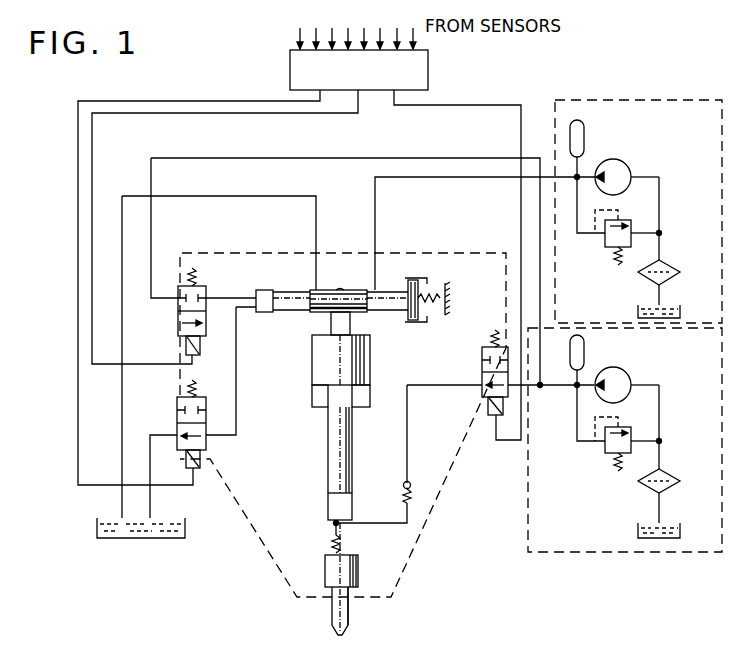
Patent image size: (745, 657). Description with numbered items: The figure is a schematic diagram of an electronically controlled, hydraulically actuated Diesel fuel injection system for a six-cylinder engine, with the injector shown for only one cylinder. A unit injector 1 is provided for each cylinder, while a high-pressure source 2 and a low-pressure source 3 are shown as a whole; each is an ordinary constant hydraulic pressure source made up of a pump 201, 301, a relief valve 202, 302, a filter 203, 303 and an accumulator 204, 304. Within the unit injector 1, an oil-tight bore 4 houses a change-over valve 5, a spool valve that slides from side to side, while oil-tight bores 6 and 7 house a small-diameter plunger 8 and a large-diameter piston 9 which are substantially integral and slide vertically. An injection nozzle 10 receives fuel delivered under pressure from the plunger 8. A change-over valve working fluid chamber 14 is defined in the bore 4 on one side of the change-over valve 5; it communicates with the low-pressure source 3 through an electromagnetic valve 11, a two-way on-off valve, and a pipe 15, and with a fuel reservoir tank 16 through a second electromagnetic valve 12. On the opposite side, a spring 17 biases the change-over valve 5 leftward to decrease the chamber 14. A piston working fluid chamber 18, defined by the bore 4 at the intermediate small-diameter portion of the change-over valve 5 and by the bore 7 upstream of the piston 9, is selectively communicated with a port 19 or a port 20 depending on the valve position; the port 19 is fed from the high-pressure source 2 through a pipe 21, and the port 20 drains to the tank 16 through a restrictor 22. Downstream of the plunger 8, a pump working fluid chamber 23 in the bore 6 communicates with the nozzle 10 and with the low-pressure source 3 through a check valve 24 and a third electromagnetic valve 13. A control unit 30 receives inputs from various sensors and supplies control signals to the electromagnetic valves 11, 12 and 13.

The unit injector 1 is at (410, 560).
The high-pressure source 2 is at (664, 102).
The low-pressure source 3 is at (527, 534).
The oil-tight bore 4 is at (342, 290).
The change-over valve 5 is at (415, 280).
The oil-tight bore 6 is at (328, 502).
The oil-tight bore 7 is at (312, 399).
The small-diameter plunger 8 is at (328, 460).
The large-diameter piston 9 is at (312, 359).
The injection nozzle 10 is at (326, 566).
The electromagnetic valve 11 is at (178, 318).
The electromagnetic valve 12 is at (180, 408).
The electromagnetic valve 13 is at (482, 364).
The change-over valve working fluid chamber 14 is at (262, 280).
The pipe 15 is at (329, 158).
The fuel reservoir tank 16 is at (160, 540).
The spring 17 is at (433, 310).
The piston working fluid chamber 18 is at (348, 322).
The port 19 is at (378, 290).
The port 20 is at (316, 296).
The pipe 21 is at (430, 180).
The restrictor 22 is at (336, 260).
The pump working fluid chamber 23 is at (352, 505).
The check valve 24 is at (410, 484).
The control unit 30 is at (428, 70).
The pump 201 is at (626, 165).
The relief valve 202 is at (603, 238).
The filter 203 is at (672, 266).
The accumulator 204 is at (584, 135).
The pump 301 is at (640, 363).
The relief valve 302 is at (603, 447).
The filter 303 is at (672, 476).
The accumulator 304 is at (584, 352).